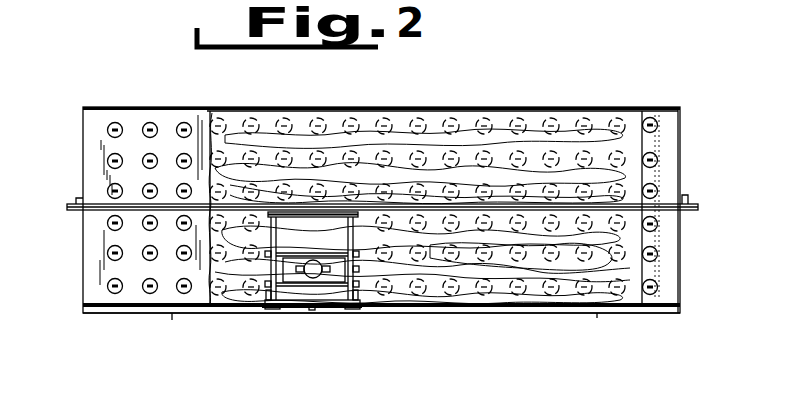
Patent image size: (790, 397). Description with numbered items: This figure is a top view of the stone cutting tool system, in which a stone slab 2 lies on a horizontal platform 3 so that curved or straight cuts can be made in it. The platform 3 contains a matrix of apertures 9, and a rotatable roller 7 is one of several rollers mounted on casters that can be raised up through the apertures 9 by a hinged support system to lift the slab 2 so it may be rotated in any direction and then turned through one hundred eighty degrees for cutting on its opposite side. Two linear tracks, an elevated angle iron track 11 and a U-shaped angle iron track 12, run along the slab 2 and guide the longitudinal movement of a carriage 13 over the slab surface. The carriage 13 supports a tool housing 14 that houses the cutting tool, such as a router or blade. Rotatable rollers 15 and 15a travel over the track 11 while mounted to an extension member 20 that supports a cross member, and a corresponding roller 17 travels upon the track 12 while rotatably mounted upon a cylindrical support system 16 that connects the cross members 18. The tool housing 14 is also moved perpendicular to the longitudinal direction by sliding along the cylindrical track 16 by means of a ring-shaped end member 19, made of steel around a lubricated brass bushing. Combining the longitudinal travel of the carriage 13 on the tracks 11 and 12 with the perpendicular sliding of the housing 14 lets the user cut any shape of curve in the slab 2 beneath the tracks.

The stone slab 2 is at (560, 127).
The horizontal platform 3 is at (101, 110).
The rotatable roller 7 is at (116, 124).
The apertures 9 is at (107, 133).
The linear track 11 is at (68, 211).
The linear track 12 is at (677, 315).
The carriage 13 is at (268, 293).
The tool housing 14 is at (297, 284).
The rotatable roller 15 is at (352, 212).
The rotatable roller 15a is at (273, 212).
The cylindrical support system 16 is at (357, 270).
The roller 17 is at (280, 310).
The cross member 18 is at (320, 284).
The ring-shaped end member 19 is at (357, 287).
The extension member 20 is at (312, 286).